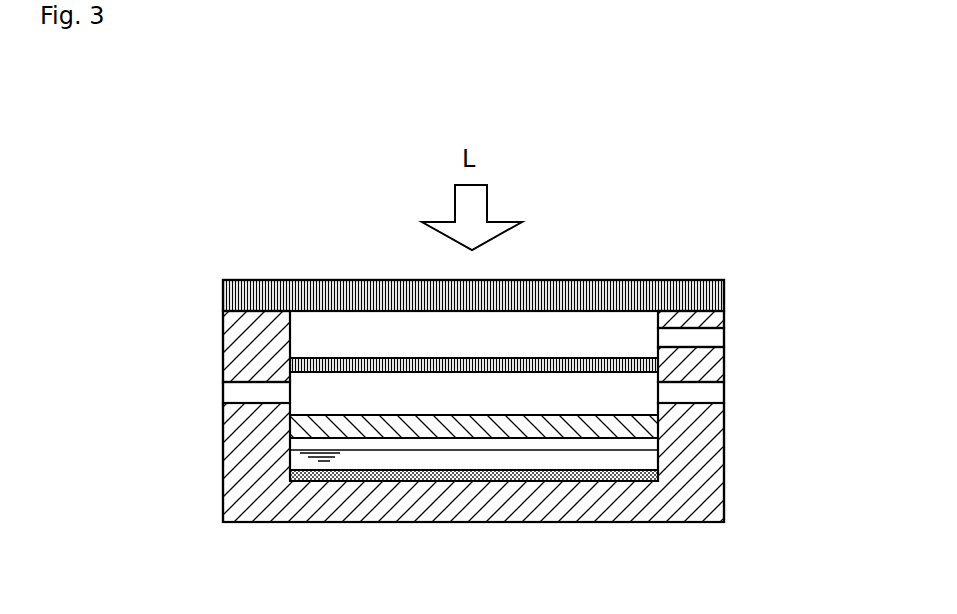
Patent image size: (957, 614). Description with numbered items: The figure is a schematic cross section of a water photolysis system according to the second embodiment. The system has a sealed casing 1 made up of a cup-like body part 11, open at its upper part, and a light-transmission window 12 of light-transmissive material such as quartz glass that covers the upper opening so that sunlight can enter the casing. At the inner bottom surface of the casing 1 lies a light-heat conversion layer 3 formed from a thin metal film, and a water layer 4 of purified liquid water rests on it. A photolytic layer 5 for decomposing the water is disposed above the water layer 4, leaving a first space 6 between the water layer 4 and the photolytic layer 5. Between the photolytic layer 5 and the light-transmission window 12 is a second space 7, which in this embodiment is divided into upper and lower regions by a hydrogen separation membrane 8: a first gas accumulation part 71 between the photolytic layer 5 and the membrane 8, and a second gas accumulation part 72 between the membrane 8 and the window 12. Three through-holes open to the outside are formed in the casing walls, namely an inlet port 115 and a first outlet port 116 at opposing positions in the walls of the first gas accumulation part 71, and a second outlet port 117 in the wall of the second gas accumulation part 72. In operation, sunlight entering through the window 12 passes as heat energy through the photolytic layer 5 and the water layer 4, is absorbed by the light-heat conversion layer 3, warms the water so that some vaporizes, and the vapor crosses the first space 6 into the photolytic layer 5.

The casing 1 is at (90, 228).
The body part 11 is at (236, 337).
The light-transmission window 12 is at (236, 300).
The inlet port 115 is at (246, 401).
The first outlet port 116 is at (704, 396).
The second outlet port 117 is at (704, 338).
The photolytic layer 5 is at (292, 430).
The first space 6 is at (645, 443).
The water layer 4 is at (640, 462).
The light-heat conversion layer 3 is at (635, 481).
The second space 7 is at (722, 187).
The first gas accumulation part 71 is at (563, 395).
The second gas accumulation part 72 is at (527, 335).
The hydrogen separation membrane 8 is at (338, 358).